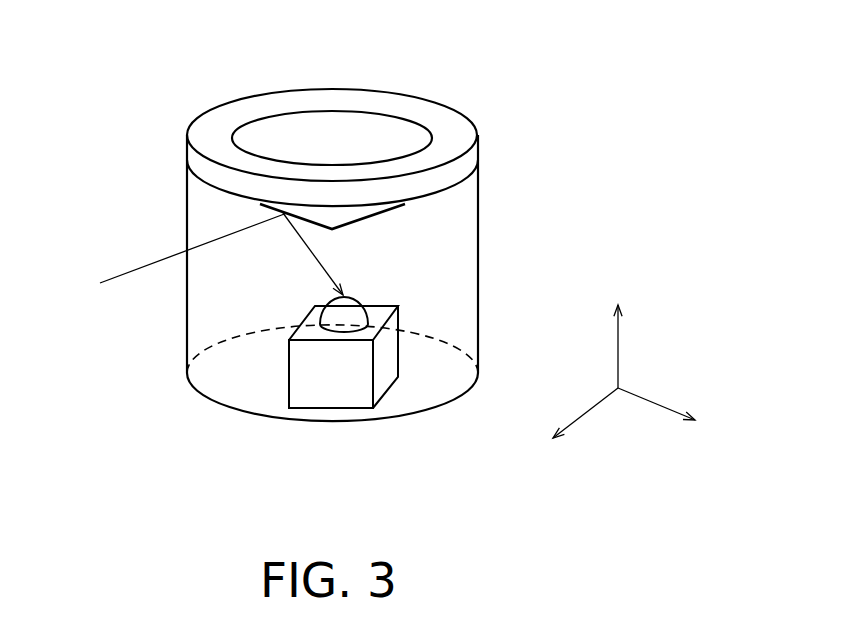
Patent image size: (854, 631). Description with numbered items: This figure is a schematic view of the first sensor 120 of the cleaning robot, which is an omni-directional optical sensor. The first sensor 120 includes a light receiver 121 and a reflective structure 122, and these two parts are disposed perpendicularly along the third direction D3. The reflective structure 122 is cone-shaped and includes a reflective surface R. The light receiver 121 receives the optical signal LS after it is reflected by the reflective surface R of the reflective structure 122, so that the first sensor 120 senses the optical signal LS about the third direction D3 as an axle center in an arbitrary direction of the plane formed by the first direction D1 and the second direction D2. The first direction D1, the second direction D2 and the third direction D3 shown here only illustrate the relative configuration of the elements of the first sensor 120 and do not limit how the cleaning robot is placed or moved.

The first sensor 120 is at (168, 142).
The reflective structure 122 is at (268, 105).
The light receiver 121 is at (327, 385).
The optical signal LS is at (201, 259).
The reflective surface R is at (380, 213).
The first direction D1 is at (575, 434).
The second direction D2 is at (677, 415).
The third direction D3 is at (618, 326).